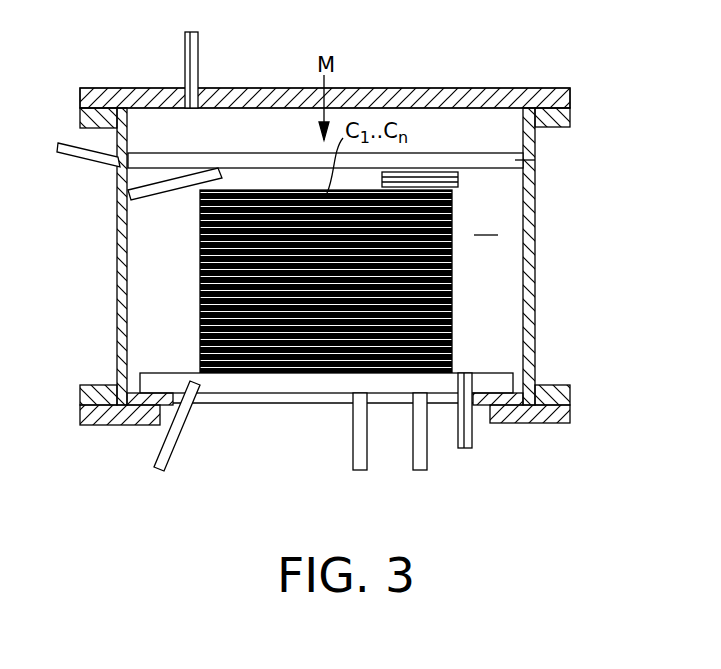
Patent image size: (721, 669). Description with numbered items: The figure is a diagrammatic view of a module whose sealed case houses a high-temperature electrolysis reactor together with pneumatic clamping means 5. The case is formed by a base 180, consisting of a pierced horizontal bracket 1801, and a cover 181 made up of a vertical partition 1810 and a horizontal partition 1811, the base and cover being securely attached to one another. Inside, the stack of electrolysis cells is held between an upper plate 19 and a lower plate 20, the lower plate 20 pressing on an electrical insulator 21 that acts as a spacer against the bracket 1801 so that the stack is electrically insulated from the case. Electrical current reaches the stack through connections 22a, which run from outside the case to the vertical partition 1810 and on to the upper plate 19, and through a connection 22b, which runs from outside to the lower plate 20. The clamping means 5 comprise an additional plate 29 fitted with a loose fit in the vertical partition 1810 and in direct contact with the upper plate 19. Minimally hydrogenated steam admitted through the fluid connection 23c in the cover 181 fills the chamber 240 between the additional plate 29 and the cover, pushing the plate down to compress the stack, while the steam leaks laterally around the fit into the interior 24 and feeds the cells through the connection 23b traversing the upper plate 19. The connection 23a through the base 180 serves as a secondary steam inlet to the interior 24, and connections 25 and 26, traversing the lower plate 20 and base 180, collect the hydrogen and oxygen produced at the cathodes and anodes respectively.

The clamping means 5 is at (187, 151).
The upper plate 19 is at (290, 183).
The lower plate 20 is at (273, 383).
The electrical insulator 21 is at (498, 393).
The electrical connections 22a is at (93, 157).
The electrical connection 22b is at (160, 473).
The fluid connection 23a is at (468, 435).
The fluid connection 23b is at (433, 178).
The fluid connection 23c is at (185, 60).
The interior 24 is at (485, 222).
The fluid connection 25 is at (360, 450).
The fluid connection 26 is at (418, 448).
The additional plate 29 is at (522, 158).
The base 180 is at (552, 370).
The cover 181 is at (587, 115).
The chamber 240 is at (433, 120).
The horizontal bracket 1801 is at (103, 410).
The vertical partition 1810 is at (117, 316).
The horizontal partition 1811 is at (500, 96).